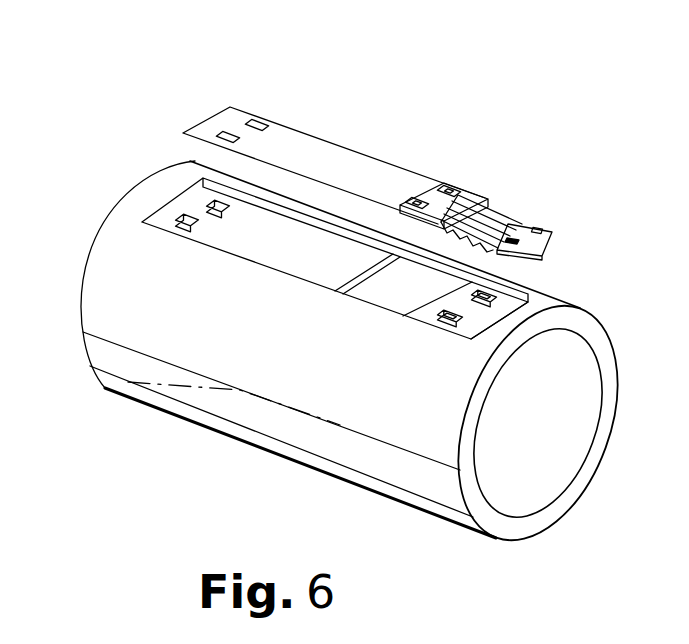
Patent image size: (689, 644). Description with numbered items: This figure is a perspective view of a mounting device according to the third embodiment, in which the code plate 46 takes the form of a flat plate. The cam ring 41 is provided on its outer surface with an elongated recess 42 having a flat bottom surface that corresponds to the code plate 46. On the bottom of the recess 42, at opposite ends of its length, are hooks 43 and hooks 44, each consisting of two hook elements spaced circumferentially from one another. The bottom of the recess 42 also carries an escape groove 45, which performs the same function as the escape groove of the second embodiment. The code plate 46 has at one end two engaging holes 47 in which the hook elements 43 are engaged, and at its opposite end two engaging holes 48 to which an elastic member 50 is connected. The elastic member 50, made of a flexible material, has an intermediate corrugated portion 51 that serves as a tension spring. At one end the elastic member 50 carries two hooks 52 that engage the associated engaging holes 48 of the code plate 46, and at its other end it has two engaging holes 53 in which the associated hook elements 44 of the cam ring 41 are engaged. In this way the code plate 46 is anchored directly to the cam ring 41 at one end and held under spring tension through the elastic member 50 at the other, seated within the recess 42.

The cam ring 41 is at (103, 357).
The elongated recess 42 is at (273, 247).
The hooks 43 is at (213, 205).
The hooks 44 is at (493, 324).
The escape groove 45 is at (392, 294).
The code plate 46 is at (308, 150).
The engaging holes 47 is at (229, 133).
The engaging holes 48 is at (445, 190).
The elastic member 50 is at (507, 181).
The corrugated portion 51 is at (508, 214).
The hooks 52 is at (421, 212).
The engaging holes 53 is at (543, 254).